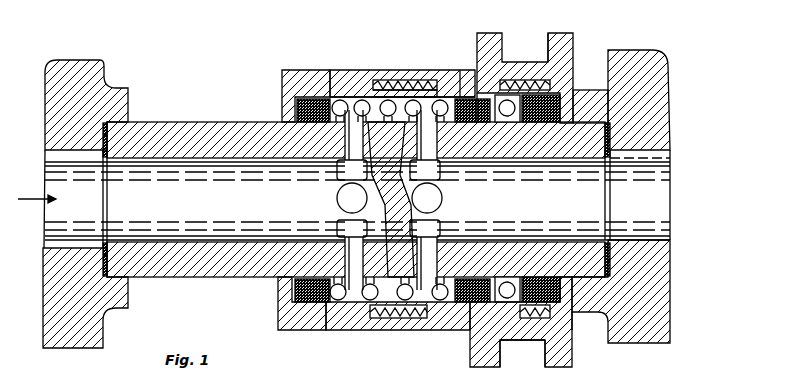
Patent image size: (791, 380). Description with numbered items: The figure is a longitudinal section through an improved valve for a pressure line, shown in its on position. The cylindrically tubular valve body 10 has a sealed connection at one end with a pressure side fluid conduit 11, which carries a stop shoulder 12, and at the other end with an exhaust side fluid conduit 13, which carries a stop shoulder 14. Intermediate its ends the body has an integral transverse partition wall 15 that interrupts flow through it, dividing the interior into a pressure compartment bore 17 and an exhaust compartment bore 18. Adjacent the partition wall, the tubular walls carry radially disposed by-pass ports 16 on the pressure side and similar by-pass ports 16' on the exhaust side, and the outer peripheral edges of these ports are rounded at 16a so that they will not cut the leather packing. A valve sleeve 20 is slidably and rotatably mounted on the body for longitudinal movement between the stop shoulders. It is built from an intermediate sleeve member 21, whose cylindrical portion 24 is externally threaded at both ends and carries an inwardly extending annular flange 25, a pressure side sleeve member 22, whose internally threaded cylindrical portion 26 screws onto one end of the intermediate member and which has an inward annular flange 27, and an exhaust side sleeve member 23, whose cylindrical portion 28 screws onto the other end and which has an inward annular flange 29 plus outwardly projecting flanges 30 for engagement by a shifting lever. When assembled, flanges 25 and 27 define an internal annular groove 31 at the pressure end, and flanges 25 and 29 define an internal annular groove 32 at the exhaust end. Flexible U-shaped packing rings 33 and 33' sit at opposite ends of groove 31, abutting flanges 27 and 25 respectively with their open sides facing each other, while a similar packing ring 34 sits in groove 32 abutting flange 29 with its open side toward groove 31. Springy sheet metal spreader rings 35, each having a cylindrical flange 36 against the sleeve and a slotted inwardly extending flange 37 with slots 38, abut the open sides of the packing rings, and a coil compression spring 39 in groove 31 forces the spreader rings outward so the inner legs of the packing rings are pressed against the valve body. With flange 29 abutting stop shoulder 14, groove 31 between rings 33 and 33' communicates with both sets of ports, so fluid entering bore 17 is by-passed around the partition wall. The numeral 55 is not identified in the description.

The valve body 10 is at (243, 128).
The pressure side fluid conduit 11 is at (97, 68).
The stop shoulder 12 is at (128, 100).
The exhaust side fluid conduit 13 is at (662, 64).
The stop shoulder 14 is at (578, 90).
The partition wall 15 is at (356, 206).
The by-pass ports 16 is at (328, 207).
The by-pass ports 16' is at (446, 210).
The rounded port edges 16a is at (340, 185).
The pressure compartment bore 17 is at (357, 201).
The exhaust compartment bore 18 is at (592, 186).
The valve sleeve 20 is at (406, 72).
The intermediate sleeve member 21 is at (452, 96).
The pressure side sleeve member 22 is at (294, 70).
The exhaust side sleeve member 23 is at (516, 72).
The cylindrical portion 24 is at (432, 85).
The annular flange 25 is at (472, 330).
The cylindrical portion 26 is at (345, 82).
The annular flange 27 is at (278, 292).
The cylindrical portion 28 is at (522, 349).
The annular flange 29 is at (574, 325).
The outwardly projecting flanges 30 is at (474, 360).
The internal annular groove 31 is at (382, 322).
The internal annular groove 32 is at (497, 122).
The packing ring 33 is at (313, 76).
The packing ring 33' is at (408, 261).
The packing ring 34 is at (540, 288).
The spreader rings 35 is at (566, 42).
The cylindrical flange 36 is at (363, 100).
The inwardly extending flange 37 is at (452, 165).
The slots 38 is at (522, 285).
The coil compression spring 39 is at (337, 166).
The packing 55 is at (470, 97).